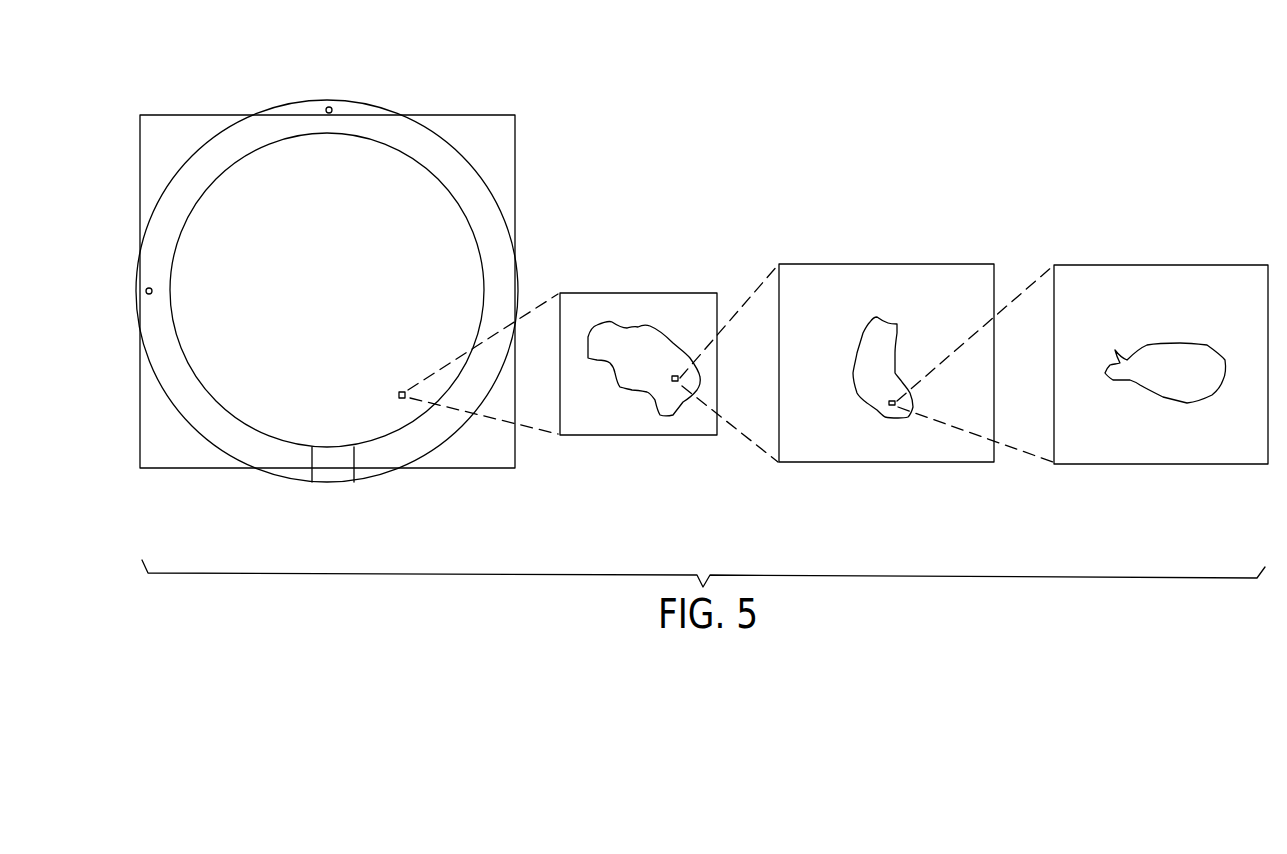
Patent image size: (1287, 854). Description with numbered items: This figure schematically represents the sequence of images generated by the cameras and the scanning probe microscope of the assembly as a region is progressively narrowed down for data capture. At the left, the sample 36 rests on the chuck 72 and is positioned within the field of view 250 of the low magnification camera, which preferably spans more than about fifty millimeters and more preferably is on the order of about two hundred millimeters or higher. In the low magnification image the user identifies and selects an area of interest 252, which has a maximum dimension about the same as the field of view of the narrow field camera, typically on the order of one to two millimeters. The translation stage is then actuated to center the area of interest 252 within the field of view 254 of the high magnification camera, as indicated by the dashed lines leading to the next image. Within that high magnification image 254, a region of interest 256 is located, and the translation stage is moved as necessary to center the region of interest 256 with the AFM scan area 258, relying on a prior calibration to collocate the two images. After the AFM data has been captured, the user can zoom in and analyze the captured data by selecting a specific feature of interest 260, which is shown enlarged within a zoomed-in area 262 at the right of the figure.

The sample 36 is at (368, 138).
The chuck 72 is at (328, 100).
The field of view of the low magnification camera 250 is at (175, 468).
The area of interest 252 is at (405, 400).
The field of view of the high magnification camera 254 is at (638, 288).
The region of interest 256 is at (676, 383).
The AFM scan area 258 is at (887, 257).
The feature of interest 260 is at (893, 408).
The zoomed-in area 262 is at (1163, 260).